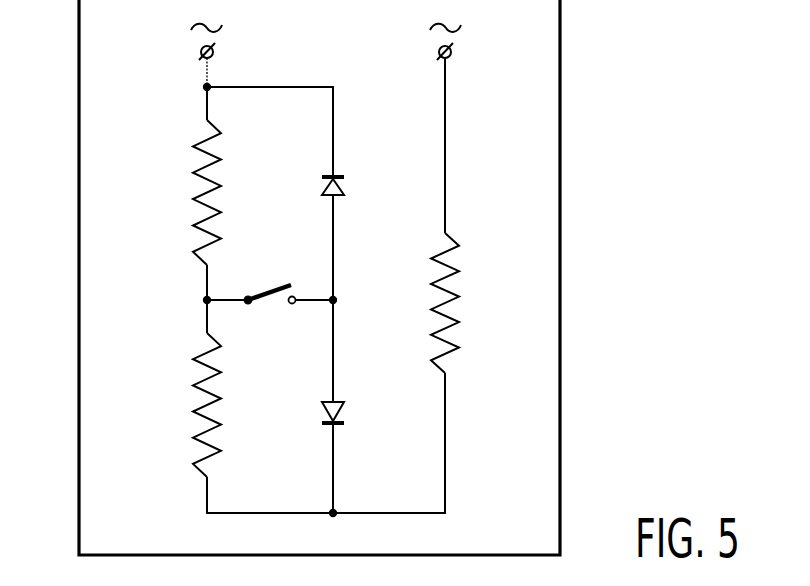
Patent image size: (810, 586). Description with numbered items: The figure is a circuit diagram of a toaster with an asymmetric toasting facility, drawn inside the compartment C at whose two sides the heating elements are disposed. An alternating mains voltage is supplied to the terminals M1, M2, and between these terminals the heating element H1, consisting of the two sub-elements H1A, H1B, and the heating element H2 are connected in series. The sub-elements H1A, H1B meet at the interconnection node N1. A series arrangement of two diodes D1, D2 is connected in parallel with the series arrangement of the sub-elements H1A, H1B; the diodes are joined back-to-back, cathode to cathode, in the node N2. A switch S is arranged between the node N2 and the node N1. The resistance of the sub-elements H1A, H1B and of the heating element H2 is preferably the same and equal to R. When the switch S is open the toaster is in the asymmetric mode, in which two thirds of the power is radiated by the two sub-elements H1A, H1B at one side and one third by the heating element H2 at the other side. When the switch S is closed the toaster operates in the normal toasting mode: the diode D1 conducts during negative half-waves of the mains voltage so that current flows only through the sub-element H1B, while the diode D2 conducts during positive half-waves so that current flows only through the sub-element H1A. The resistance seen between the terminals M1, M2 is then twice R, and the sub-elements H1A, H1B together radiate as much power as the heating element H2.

The compartment C is at (78, 358).
The terminal M1 is at (200, 52).
The terminal M2 is at (452, 52).
The heating element H1 is at (162, 298).
The sub-element H1A is at (201, 179).
The sub-element H1B is at (201, 392).
The heating element H2 is at (460, 293).
The interconnection node N1 is at (204, 301).
The node N2 is at (337, 300).
The switch S is at (273, 305).
The diode D1 is at (345, 193).
The diode D2 is at (345, 410).